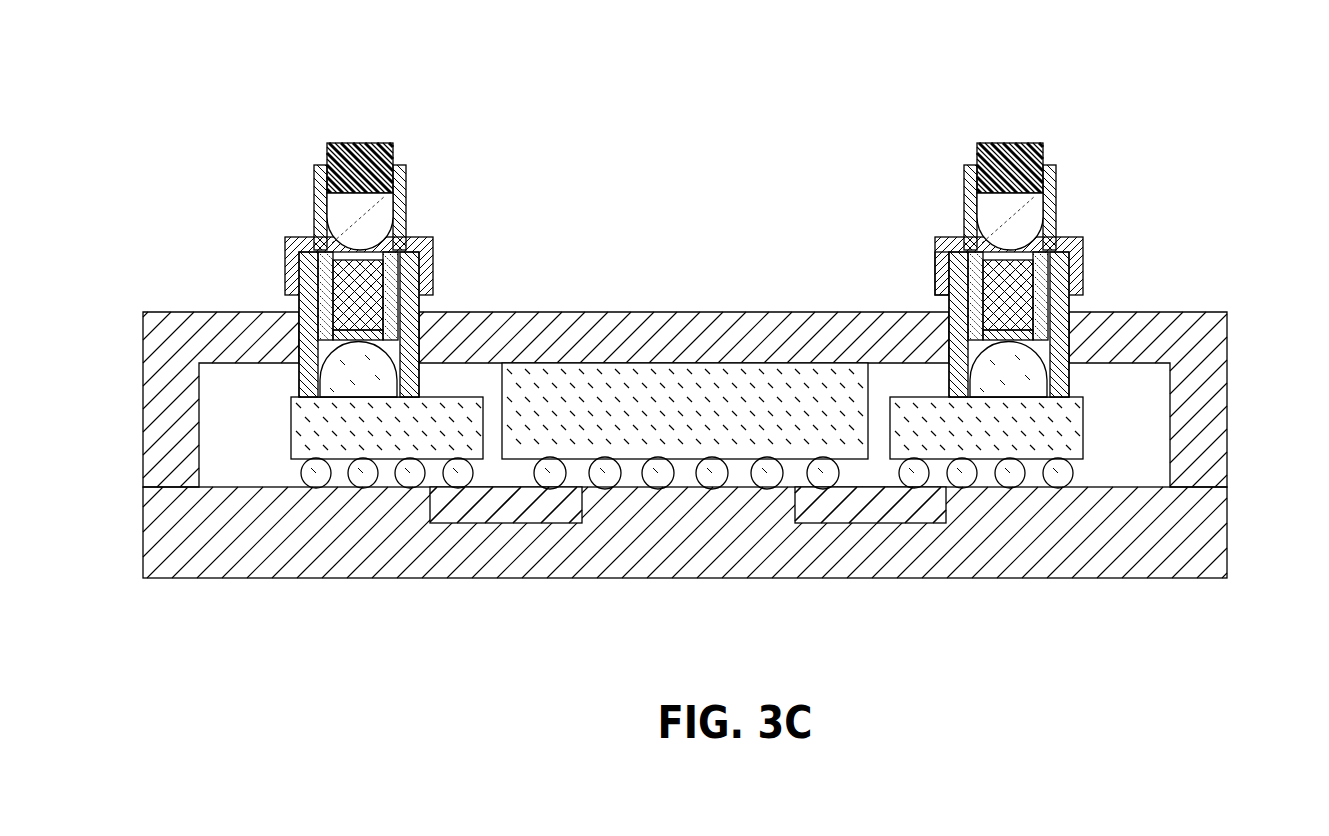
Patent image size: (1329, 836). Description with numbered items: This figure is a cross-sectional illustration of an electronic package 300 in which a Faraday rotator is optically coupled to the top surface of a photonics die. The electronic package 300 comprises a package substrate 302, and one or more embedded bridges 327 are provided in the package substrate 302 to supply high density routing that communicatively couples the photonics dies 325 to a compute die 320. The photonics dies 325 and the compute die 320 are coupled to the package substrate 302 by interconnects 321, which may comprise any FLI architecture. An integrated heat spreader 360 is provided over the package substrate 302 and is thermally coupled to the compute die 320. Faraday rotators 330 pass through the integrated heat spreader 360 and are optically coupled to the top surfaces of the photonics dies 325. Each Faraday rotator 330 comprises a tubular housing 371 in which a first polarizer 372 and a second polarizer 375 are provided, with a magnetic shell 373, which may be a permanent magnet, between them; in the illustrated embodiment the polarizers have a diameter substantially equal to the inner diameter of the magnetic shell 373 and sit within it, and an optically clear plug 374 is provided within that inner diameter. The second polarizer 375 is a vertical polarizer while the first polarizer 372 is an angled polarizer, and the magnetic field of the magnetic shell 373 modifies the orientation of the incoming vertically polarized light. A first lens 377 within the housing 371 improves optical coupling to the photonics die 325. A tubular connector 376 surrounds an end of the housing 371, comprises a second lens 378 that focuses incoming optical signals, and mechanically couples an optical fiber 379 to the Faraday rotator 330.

The electronic package 300 is at (719, 355).
The package substrate 302 is at (1203, 530).
The compute die 320 is at (683, 375).
The interconnects 321 is at (770, 470).
The photonics dies 325 is at (443, 417).
The embedded bridges 327 is at (877, 505).
The Faraday rotator 330 is at (1035, 250).
The integrated heat spreader 360 is at (1232, 322).
The tubular housing 371 is at (1104, 317).
The first polarizer 372 is at (1067, 324).
The magnetic shell 373 is at (893, 256).
The optically clear plug 374 is at (1043, 256).
The second polarizer 375 is at (1050, 205).
The connector 376 is at (939, 207).
The first lens 377 is at (1060, 386).
The second lens 378 is at (1069, 170).
The optical fiber 379 is at (1000, 132).